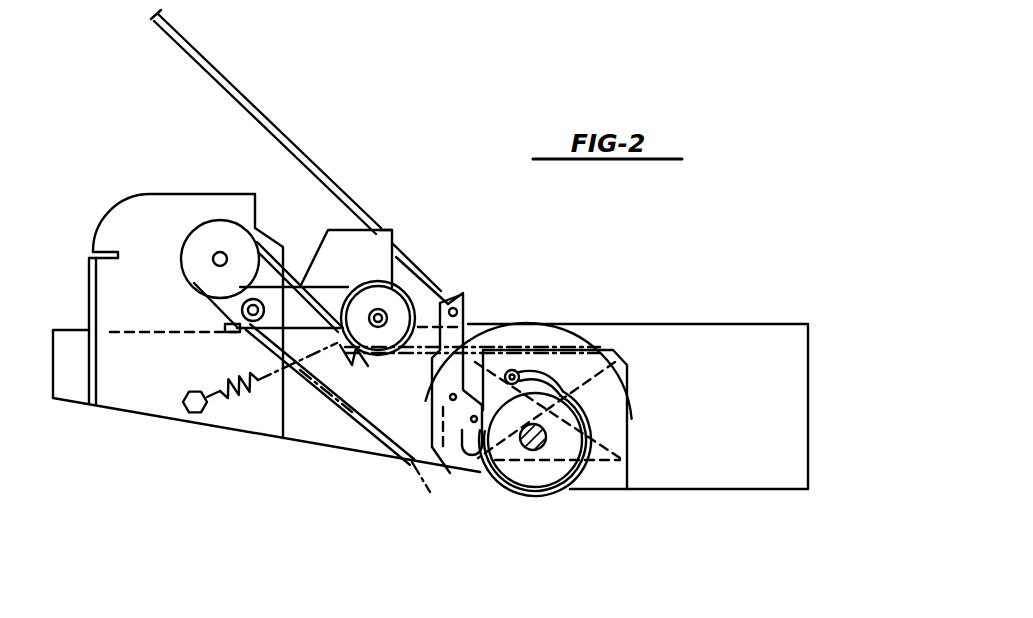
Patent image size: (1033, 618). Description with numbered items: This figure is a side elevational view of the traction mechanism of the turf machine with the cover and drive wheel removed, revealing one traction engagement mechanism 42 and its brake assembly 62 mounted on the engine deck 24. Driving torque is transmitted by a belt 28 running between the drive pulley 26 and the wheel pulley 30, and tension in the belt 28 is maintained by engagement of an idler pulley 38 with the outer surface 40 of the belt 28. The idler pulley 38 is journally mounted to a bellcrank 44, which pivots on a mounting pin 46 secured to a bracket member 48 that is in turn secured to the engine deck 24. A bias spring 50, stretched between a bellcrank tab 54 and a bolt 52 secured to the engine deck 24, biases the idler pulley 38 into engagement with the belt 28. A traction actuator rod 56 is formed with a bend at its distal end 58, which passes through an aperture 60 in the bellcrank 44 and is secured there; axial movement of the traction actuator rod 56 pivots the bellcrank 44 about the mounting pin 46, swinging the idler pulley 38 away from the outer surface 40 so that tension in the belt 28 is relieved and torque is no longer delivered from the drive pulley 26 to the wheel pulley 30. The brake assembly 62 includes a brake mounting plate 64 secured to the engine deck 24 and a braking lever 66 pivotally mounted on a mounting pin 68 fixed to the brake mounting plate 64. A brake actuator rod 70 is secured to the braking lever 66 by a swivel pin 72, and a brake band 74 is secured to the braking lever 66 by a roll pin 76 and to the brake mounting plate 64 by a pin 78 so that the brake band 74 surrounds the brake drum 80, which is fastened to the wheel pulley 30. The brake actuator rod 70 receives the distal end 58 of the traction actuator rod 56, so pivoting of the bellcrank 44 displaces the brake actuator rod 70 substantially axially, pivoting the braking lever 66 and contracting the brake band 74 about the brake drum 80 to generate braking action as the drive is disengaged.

The engine deck 24 is at (778, 325).
The drive pulley 26 is at (203, 237).
The belt 28 is at (363, 418).
The wheel pulley 30 is at (500, 532).
The idler pulley 38 is at (415, 274).
The outer surface 40 is at (286, 276).
The traction engagement mechanism 42 is at (480, 278).
The bellcrank 44 is at (358, 267).
The mounting pin 46 is at (252, 322).
The bracket member 48 is at (118, 226).
The bias spring 50 is at (270, 383).
The bolt 52 is at (190, 412).
The bellcrank tab 54 is at (392, 355).
The traction actuator rod 56 is at (222, 82).
The distal end 58 is at (389, 228).
The aperture 60 is at (392, 240).
The brake assembly 62 is at (615, 335).
The brake mounting plate 64 is at (627, 394).
The braking lever 66 is at (466, 333).
The mounting pin 68 is at (432, 450).
The brake actuator rod 70 is at (447, 292).
The swivel pin 72 is at (465, 312).
The brake band 74 is at (592, 438).
The roll pin 76 is at (468, 487).
The pin 78 is at (580, 371).
The brake drum 80 is at (575, 470).